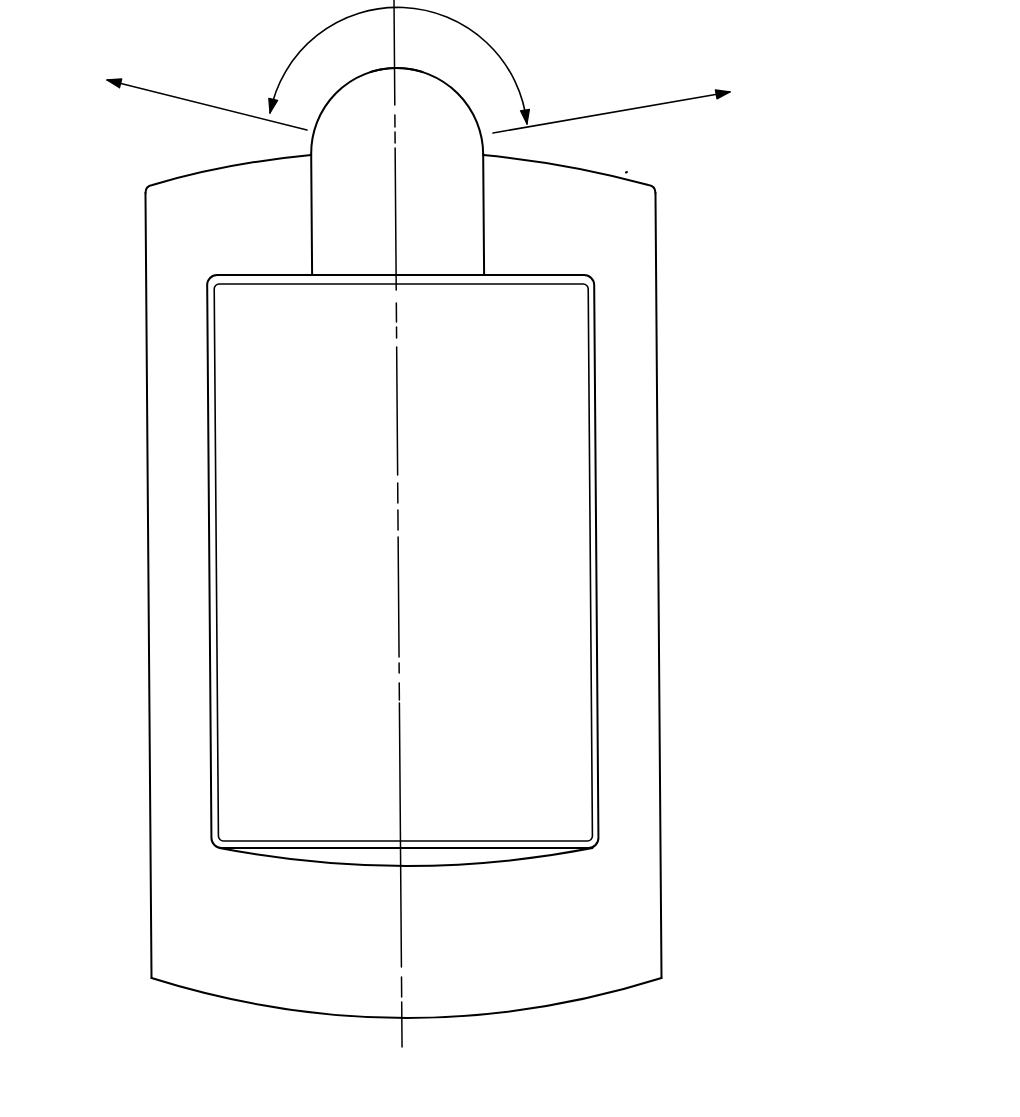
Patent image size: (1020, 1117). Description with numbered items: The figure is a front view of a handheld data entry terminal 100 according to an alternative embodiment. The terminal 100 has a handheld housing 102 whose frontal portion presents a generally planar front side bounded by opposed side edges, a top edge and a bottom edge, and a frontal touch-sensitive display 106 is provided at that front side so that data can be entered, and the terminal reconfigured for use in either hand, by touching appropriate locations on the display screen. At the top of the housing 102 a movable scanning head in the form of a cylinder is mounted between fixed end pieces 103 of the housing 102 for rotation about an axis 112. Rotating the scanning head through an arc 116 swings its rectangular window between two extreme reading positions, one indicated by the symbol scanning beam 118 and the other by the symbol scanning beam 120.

The data entry terminal 100 is at (125, 273).
The handheld housing 102 is at (148, 603).
The fixed end pieces 103 is at (385, 201).
The touch-sensitive display 106 is at (502, 536).
The axis 112 is at (397, 152).
The arc 116 is at (477, 42).
The symbol scanning beam 118 is at (178, 92).
The symbol scanning beam 120 is at (640, 105).